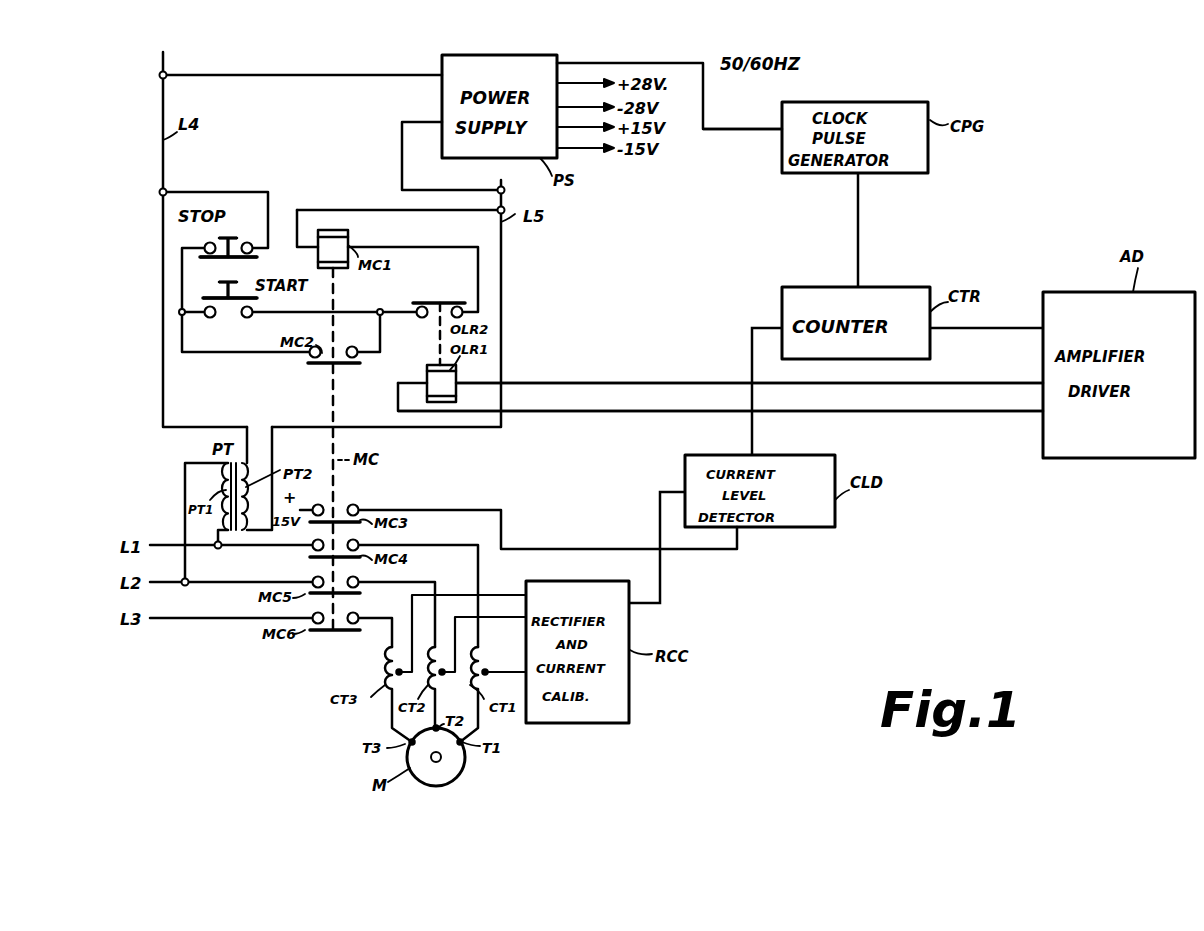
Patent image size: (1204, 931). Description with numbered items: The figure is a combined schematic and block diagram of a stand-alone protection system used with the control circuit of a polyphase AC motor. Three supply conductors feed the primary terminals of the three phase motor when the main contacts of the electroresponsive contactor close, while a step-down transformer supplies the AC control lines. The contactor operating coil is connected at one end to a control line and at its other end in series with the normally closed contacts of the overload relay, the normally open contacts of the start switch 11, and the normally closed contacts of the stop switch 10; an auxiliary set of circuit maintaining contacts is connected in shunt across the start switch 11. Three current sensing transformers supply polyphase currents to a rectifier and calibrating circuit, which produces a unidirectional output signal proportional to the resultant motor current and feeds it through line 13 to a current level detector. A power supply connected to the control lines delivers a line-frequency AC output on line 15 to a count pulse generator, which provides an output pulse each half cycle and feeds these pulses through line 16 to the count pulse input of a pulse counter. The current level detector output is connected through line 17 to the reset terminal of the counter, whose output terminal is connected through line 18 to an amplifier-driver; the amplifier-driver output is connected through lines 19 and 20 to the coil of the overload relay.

The stop switch 10 is at (243, 242).
The start switch 11 is at (228, 316).
The line 13 is at (660, 575).
The AC line 15 is at (756, 111).
The line 16 is at (858, 226).
The line 17 is at (752, 428).
The line 18 is at (995, 328).
The line 19 is at (970, 383).
The line 20 is at (975, 411).